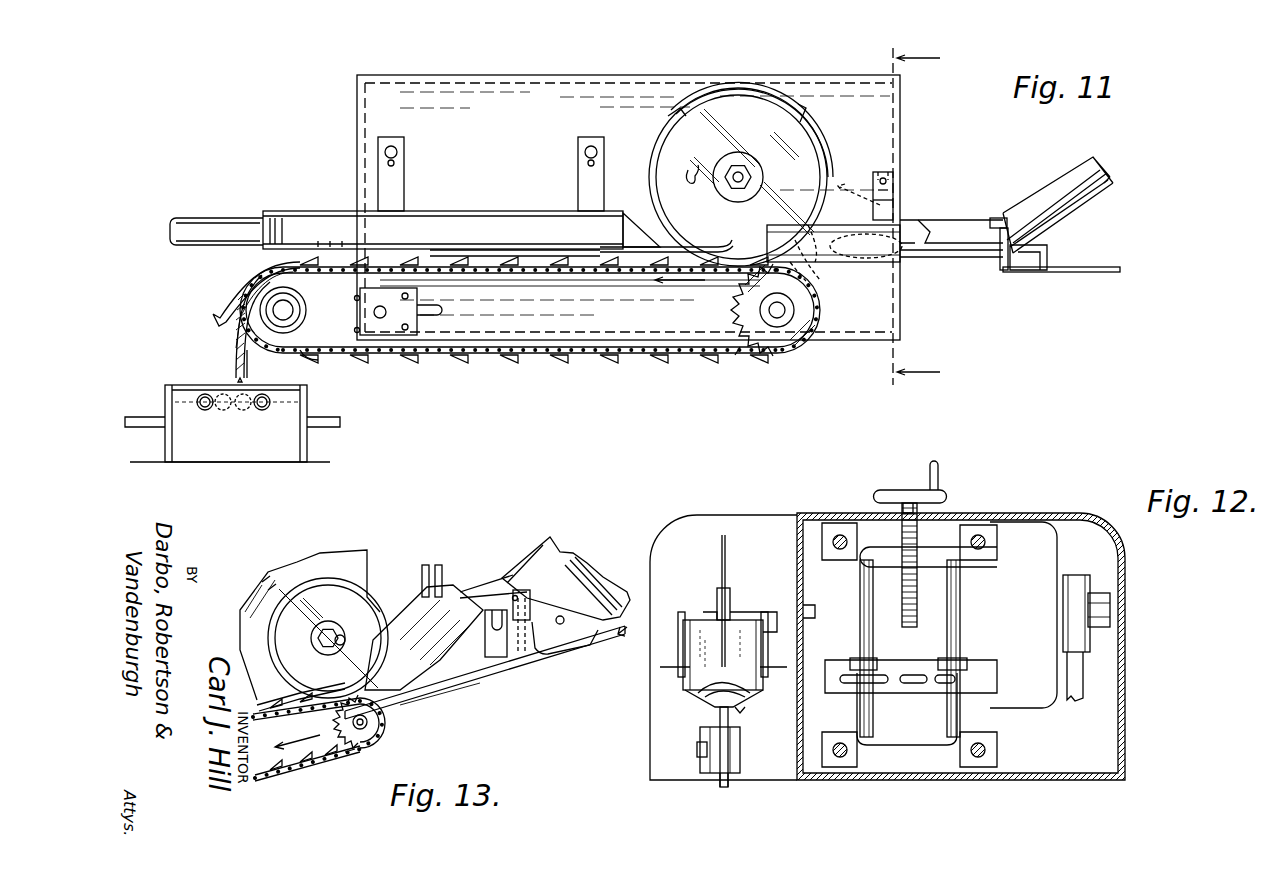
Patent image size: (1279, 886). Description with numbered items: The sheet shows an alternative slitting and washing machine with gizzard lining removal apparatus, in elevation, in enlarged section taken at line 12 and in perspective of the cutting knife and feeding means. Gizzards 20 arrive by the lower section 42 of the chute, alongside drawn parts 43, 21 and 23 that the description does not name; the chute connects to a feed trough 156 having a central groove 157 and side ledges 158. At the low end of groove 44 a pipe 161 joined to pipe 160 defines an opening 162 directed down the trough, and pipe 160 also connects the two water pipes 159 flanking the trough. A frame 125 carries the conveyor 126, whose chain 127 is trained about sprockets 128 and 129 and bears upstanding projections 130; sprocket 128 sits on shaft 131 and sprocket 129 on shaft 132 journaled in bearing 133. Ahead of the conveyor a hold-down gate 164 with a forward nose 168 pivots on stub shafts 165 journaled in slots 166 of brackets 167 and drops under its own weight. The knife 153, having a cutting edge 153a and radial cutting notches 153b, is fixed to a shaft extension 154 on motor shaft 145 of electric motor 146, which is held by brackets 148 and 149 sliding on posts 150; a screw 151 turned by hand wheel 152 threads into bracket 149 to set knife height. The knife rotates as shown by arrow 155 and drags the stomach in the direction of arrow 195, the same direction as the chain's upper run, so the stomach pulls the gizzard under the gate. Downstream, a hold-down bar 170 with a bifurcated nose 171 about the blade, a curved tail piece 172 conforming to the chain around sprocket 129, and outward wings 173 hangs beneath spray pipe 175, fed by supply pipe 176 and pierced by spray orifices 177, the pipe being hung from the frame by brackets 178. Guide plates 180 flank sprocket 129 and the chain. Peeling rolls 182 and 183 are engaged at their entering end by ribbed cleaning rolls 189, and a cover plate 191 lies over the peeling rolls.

In FIG. 11, the section line 12 is at (932, 216).
In FIG. 11, the gizzard 20 is at (232, 298).
In FIG. 11, the strip end 21 is at (233, 367).
In FIG. 11, the strip loop 23 is at (232, 325).
In FIG. 11, the lower section of the chute 42 is at (1070, 170).
In FIG. 13, the lower section of the chute 42 is at (535, 553).
In FIG. 11, the groove 43 is at (1102, 170).
In FIG. 13, the groove 43 is at (578, 557).
In FIG. 11, the groove 44 is at (1108, 188).
In FIG. 13, the groove 44 is at (587, 567).
In FIG. 11, the frame 125 is at (902, 165).
In FIG. 12, the frame 125 is at (1125, 673).
In FIG. 11, the conveyor 126 is at (728, 356).
In FIG. 13, the conveyor 126 is at (357, 750).
In FIG. 11, the chain 127 is at (590, 347).
In FIG. 13, the chain 127 is at (319, 739).
In FIG. 11, the sprocket 128 is at (797, 335).
In FIG. 13, the sprocket 128 is at (383, 720).
In FIG. 12, the sprocket 128 is at (724, 788).
In FIG. 11, the sprocket 129 is at (305, 352).
In FIG. 11, the projections 130 is at (487, 263).
In FIG. 13, the projections 130 is at (331, 765).
In FIG. 11, the shaft 131 is at (777, 320).
In FIG. 13, the shaft 131 is at (378, 734).
In FIG. 12, the shaft 131 is at (698, 755).
In FIG. 11, the shaft 132 is at (305, 318).
In FIG. 11, the bearing 133 is at (300, 302).
In FIG. 12, the motor shaft 145 is at (1113, 607).
In FIG. 12, the electric motor 146 is at (1040, 631).
In FIG. 12, the bracket 148 is at (912, 660).
In FIG. 12, the bracket 149 is at (998, 560).
In FIG. 12, the posts 150 is at (950, 722).
In FIG. 12, the screw 151 is at (917, 597).
In FIG. 12, the hand wheel 152 is at (943, 495).
In FIG. 11, the knife 153 is at (802, 179).
In FIG. 13, the knife 153 is at (323, 595).
In FIG. 12, the knife 153 is at (725, 537).
In FIG. 11, the cutting edge 153a is at (782, 95).
In FIG. 13, the cutting edge 153a is at (348, 578).
In FIG. 11, the radial cutting notches 153b is at (678, 116).
In FIG. 13, the radial cutting notches 153b is at (268, 580).
In FIG. 11, the shaft extension 154 is at (745, 160).
In FIG. 12, the shaft extension 154 is at (776, 612).
In FIG. 11, the arrow 155 is at (688, 170).
In FIG. 11, the feed trough 156 is at (932, 260).
In FIG. 13, the feed trough 156 is at (545, 660).
In FIG. 11, the central groove 157 is at (987, 258).
In FIG. 12, the central groove 157 is at (718, 705).
In FIG. 11, the side ledges 158 is at (968, 244).
In FIG. 12, the side ledges 158 is at (698, 695).
In FIG. 11, the water pipes 159 is at (1004, 218).
In FIG. 13, the water pipes 159 is at (497, 597).
In FIG. 11, the pipe 160 is at (1075, 272).
In FIG. 13, the pipe 160 is at (553, 667).
In FIG. 11, the pipe 161 is at (1047, 250).
In FIG. 13, the opening 162 is at (591, 638).
In FIG. 11, the gate 164 is at (868, 172).
In FIG. 13, the gate 164 is at (438, 565).
In FIG. 12, the gate 164 is at (702, 660).
In FIG. 11, the stub shafts 165 is at (890, 183).
In FIG. 12, the stub shafts 165 is at (680, 612).
In FIG. 11, the slots 166 is at (887, 165).
In FIG. 11, the brackets 167 is at (893, 200).
In FIG. 13, the brackets 167 is at (428, 577).
In FIG. 12, the brackets 167 is at (730, 593).
In FIG. 11, the nose 168 is at (785, 226).
In FIG. 13, the nose 168 is at (367, 610).
In FIG. 12, the nose 168 is at (748, 700).
In FIG. 11, the hold-down bar 170 is at (539, 250).
In FIG. 11, the bifurcated nose 171 is at (703, 247).
In FIG. 13, the bifurcated nose 171 is at (297, 692).
In FIG. 11, the curved tail piece 172 is at (218, 307).
In FIG. 11, the wings 173 is at (534, 272).
In FIG. 11, the spray pipe 175 is at (436, 211).
In FIG. 11, the supply pipe 176 is at (191, 218).
In FIG. 11, the spray orifices 177 is at (342, 243).
In FIG. 11, the brackets 178 is at (398, 137).
In FIG. 11, the guide plates 180 is at (250, 369).
In FIG. 11, the peeling roll 182 is at (220, 411).
In FIG. 11, the peeling roll 183 is at (245, 411).
In FIG. 11, the ribbed cleaning rolls 189 is at (175, 402).
In FIG. 11, the cover plate 191 is at (170, 385).
In FIG. 11, the arrow 195 is at (705, 280).
In FIG. 13, the arrow 195 is at (298, 717).